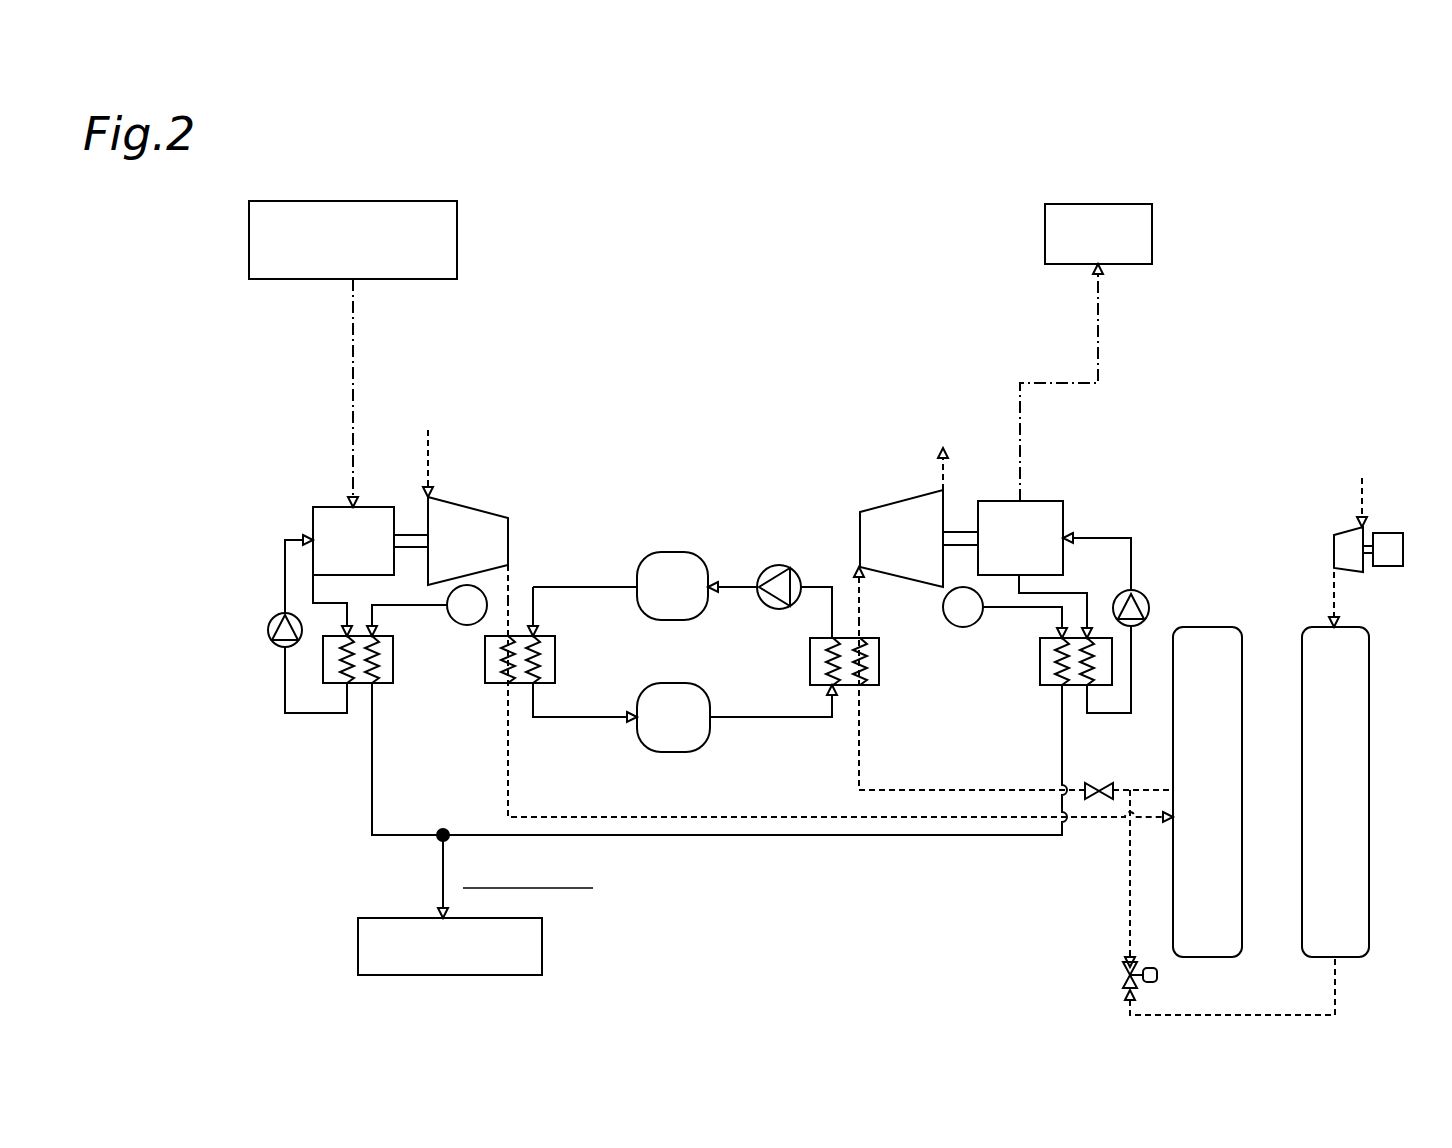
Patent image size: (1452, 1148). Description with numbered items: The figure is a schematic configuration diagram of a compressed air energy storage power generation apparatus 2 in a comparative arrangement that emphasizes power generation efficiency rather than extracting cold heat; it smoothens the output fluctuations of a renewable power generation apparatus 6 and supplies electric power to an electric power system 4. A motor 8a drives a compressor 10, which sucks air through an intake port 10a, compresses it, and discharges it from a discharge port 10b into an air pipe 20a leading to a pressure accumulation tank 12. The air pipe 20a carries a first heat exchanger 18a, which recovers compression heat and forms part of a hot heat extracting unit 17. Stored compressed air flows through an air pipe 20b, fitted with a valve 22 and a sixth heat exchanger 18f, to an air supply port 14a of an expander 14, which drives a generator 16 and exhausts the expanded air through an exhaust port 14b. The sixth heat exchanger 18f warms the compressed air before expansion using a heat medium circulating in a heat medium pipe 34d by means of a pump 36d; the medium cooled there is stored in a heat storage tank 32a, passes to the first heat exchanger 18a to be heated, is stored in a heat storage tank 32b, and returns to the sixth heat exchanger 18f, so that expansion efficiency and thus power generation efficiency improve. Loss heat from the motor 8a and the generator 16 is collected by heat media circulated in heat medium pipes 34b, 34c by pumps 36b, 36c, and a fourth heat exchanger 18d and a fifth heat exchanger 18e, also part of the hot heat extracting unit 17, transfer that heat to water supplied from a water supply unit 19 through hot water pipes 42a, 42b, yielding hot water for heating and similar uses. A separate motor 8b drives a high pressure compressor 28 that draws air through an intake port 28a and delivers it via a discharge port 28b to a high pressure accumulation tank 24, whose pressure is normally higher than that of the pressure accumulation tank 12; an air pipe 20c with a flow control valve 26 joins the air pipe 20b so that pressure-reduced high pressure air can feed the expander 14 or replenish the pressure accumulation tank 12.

The CAES power generation apparatus 2 is at (1230, 337).
The electric power system 4 is at (1152, 224).
The power generation apparatus 6 is at (457, 232).
The motor 8a is at (313, 507).
The motor 8b is at (1403, 535).
The compressor 10 is at (468, 510).
The intake port 10a is at (428, 497).
The discharge port 10b is at (508, 565).
The pressure accumulation tank 12 is at (1243, 752).
The expander 14 is at (870, 510).
The air supply port 14a is at (858, 572).
The exhaust port 14b is at (935, 485).
The generator 16 is at (1063, 503).
The hot heat extracting unit 17 is at (684, 709).
The first heat exchanger 18a is at (490, 685).
The fourth heat exchanger 18d is at (360, 683).
The fifth heat exchanger 18e is at (1040, 668).
The sixth heat exchanger 18f is at (879, 670).
The water supply unit 19 is at (462, 624).
The air pipe 20a is at (508, 777).
The air pipe 20b is at (859, 765).
The air pipe 20c is at (1258, 1015).
The valve 22 is at (1103, 786).
The high pressure accumulation tank 24 is at (1370, 755).
The flow control valve 26 is at (1122, 975).
The high pressure compressor 28 is at (1334, 550).
The intake port 28a is at (1364, 522).
The discharge port 28b is at (1334, 568).
The heat storage tank 32a is at (690, 552).
The heat storage tank 32b is at (680, 752).
The heat medium pipe 34b is at (285, 702).
The heat medium pipe 34c is at (1135, 540).
The heat medium pipe 34d is at (610, 587).
The pump 36b is at (268, 630).
The pump 36c is at (1149, 607).
The pump 36d is at (777, 609).
The hot water pipe 42a is at (372, 812).
The hot water pipe 42b is at (1062, 768).